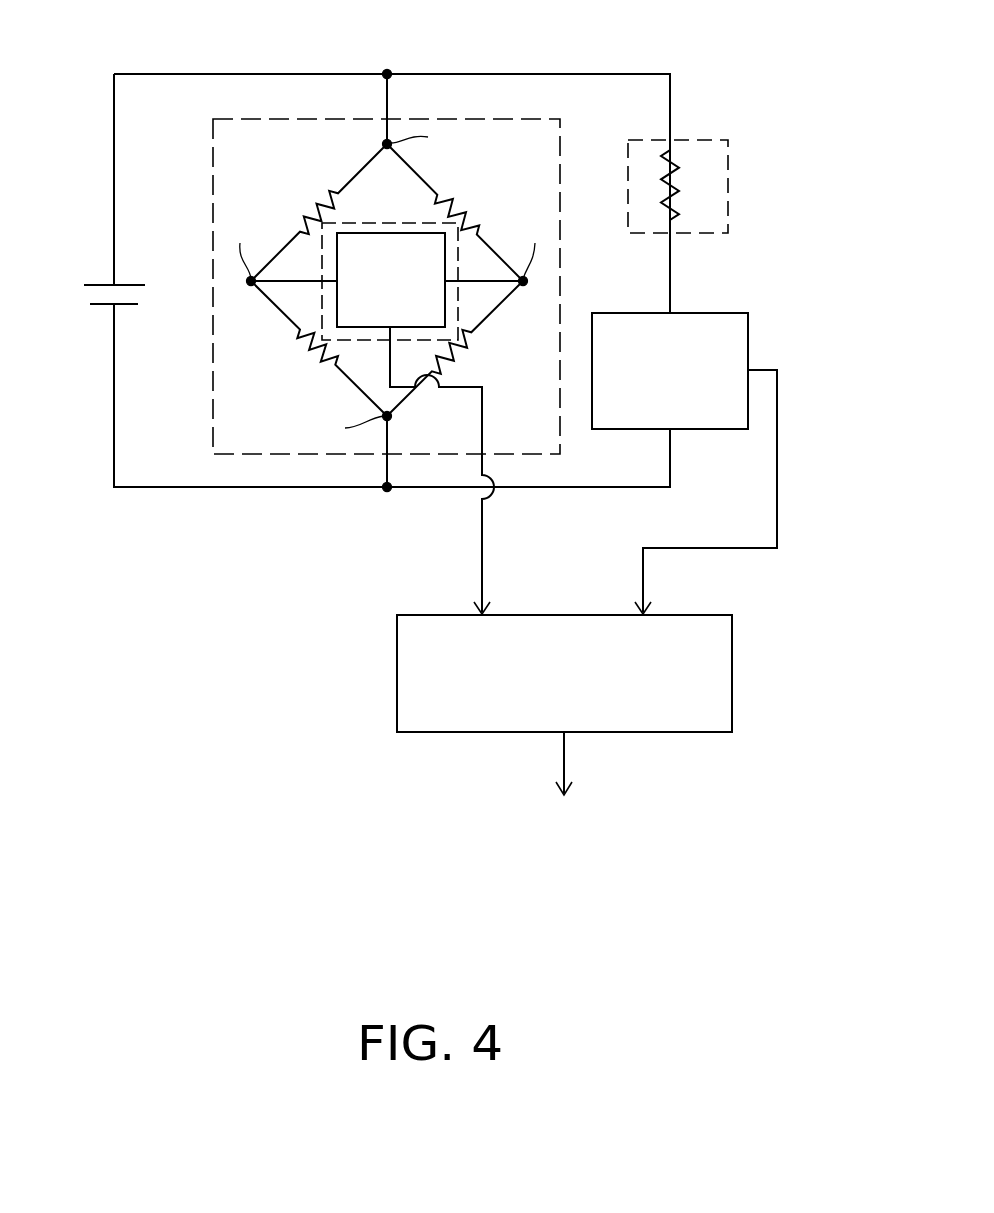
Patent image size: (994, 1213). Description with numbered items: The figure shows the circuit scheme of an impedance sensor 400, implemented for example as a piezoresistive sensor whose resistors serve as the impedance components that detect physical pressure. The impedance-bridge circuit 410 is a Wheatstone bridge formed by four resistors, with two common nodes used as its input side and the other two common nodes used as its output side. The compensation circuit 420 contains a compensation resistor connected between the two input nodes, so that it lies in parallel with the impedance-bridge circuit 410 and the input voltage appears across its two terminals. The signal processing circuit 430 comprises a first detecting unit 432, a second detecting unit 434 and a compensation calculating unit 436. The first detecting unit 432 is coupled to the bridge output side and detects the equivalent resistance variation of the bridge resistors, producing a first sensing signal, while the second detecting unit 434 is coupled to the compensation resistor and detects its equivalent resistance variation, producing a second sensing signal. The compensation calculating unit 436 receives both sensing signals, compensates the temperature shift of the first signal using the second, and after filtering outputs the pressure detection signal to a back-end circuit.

The impedance sensor 400 is at (465, 454).
The impedance-bridge circuit 410 is at (514, 118).
The compensation circuit 420 is at (728, 168).
The signal processing circuit 430 is at (223, 571).
The first detecting unit 432 is at (388, 223).
The second detecting unit 434 is at (713, 313).
The compensation calculating unit 436 is at (732, 672).